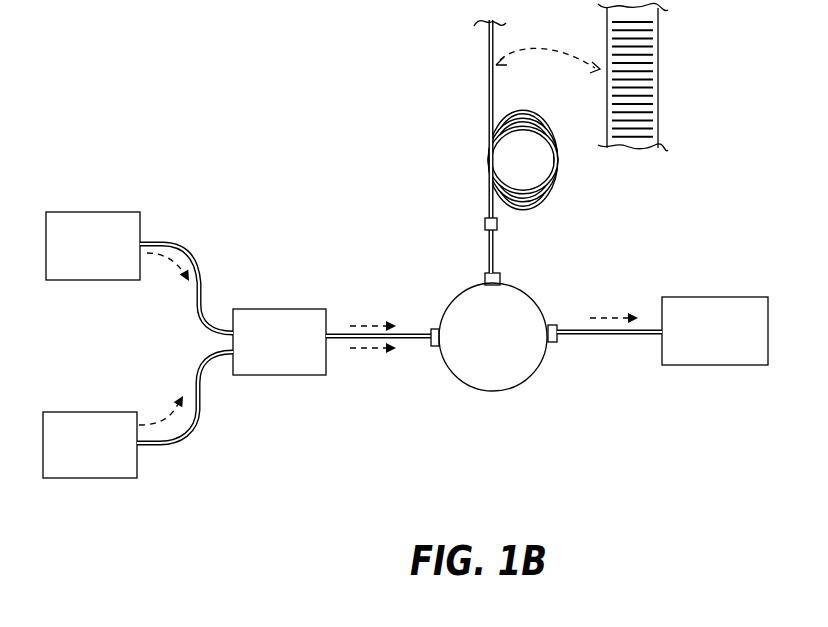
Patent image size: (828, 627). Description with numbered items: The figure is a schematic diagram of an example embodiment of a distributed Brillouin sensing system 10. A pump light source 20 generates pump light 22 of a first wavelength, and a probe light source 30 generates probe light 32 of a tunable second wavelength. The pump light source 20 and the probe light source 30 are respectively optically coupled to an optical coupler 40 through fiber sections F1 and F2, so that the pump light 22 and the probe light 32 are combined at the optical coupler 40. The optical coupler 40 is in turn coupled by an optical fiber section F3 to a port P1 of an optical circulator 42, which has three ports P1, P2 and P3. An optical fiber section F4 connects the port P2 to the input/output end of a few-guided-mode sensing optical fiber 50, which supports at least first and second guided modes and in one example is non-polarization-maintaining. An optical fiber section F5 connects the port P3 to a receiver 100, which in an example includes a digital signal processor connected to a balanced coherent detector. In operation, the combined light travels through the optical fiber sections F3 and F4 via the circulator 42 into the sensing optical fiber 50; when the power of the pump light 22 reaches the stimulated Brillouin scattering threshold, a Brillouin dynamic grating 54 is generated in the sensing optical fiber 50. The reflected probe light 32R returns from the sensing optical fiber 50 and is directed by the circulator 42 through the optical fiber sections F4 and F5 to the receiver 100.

The distributed Brillouin sensing system 10 is at (140, 76).
The pump light source 20 is at (113, 264).
The pump light 22 is at (163, 256).
The probe light source 30 is at (104, 461).
The probe light 32 is at (174, 423).
The reflected probe light 32R is at (611, 318).
The optical coupler 40 is at (298, 356).
The optical circulator 42 is at (513, 352).
The sensing optical fiber 50 is at (504, 149).
The Brillouin dynamic grating 54 is at (667, 22).
The receiver 100 is at (739, 344).
The fiber section F1 is at (190, 256).
The fiber section F2 is at (197, 412).
The optical fiber section F3 is at (410, 332).
The optical fiber section F4 is at (494, 264).
The optical fiber section F5 is at (585, 337).
The port P1 is at (433, 348).
The port P2 is at (486, 278).
The port P3 is at (556, 324).